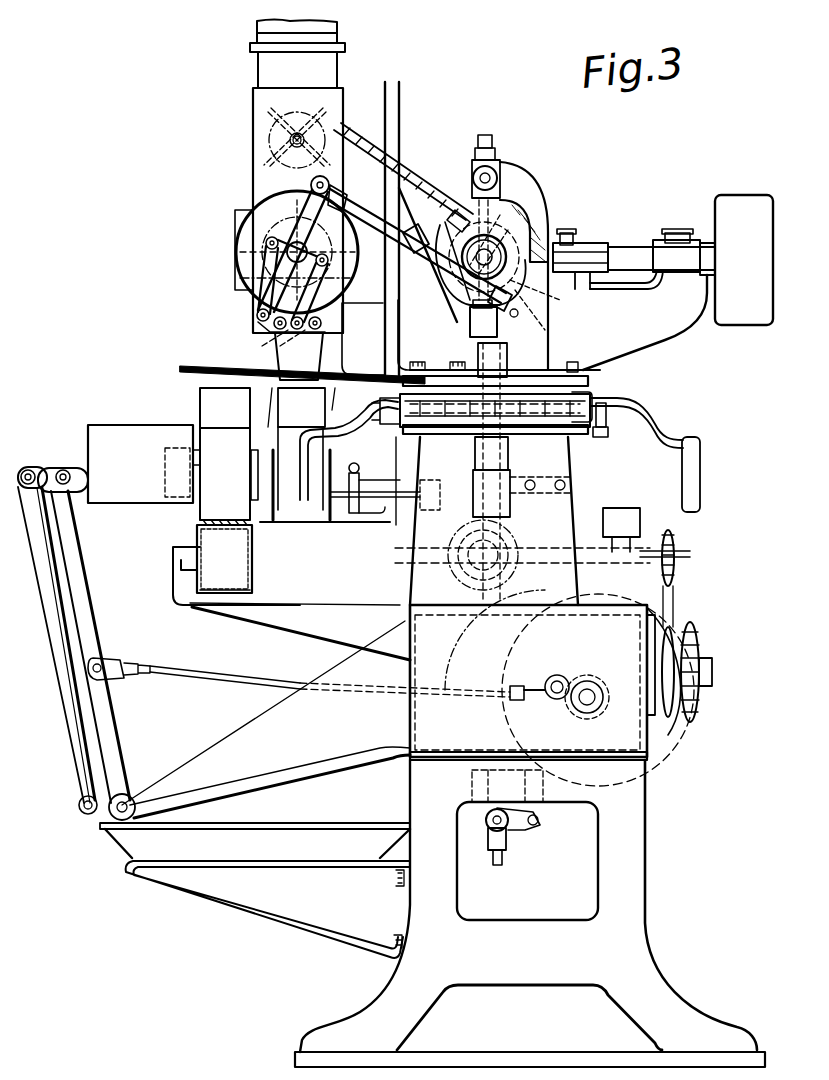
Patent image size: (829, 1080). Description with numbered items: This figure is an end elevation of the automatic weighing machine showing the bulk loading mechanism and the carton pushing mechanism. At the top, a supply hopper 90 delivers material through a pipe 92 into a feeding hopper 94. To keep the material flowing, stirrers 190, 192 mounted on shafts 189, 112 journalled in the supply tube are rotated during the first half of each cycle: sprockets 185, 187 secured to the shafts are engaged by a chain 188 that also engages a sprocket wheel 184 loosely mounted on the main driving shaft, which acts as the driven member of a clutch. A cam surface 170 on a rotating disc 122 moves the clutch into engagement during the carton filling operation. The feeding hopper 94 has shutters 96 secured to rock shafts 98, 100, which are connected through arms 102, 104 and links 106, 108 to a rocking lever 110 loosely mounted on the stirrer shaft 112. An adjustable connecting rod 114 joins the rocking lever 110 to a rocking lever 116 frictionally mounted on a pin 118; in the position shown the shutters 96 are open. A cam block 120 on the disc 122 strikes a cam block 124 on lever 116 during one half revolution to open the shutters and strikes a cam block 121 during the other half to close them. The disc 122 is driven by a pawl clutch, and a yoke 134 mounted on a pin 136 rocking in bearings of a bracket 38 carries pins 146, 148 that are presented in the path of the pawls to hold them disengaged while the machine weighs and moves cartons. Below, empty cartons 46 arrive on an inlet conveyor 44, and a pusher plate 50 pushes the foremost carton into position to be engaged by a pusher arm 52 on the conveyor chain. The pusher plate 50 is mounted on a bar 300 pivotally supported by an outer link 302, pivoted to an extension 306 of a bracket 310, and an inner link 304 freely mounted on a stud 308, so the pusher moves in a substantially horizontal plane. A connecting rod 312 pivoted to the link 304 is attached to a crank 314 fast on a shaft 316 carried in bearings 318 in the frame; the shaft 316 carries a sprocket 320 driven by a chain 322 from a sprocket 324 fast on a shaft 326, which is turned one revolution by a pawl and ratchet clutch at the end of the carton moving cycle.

The supply hopper 90 is at (257, 28).
The pipe 92 is at (253, 105).
The stirrer 190 is at (268, 136).
The shaft 189 is at (297, 140).
The sprocket 185 is at (263, 128).
The chain 188 is at (385, 132).
The feeding hopper 94 is at (248, 222).
The shaft 112 is at (285, 245).
The stirrer 192 is at (250, 252).
The rocking lever 110 is at (312, 195).
The link 106 is at (250, 280).
The sprocket 187 is at (255, 290).
The arm 102 is at (258, 320).
The rock shaft 98 is at (274, 330).
The shutter 96 is at (262, 347).
The rock shaft 100 is at (322, 345).
The arm 104 is at (330, 340).
The link 108 is at (363, 339).
The adjustable connecting rod 114 is at (395, 198).
The rotating disc 122 is at (425, 185).
The cam block 121 is at (470, 176).
The pin 118 is at (500, 165).
The pin 146 is at (512, 175).
The cam block 120 is at (525, 195).
The sprocket wheel 184 is at (520, 206).
The pin 148 is at (468, 318).
The cam surface 170 is at (458, 316).
The cam block 124 is at (548, 302).
The rocking lever 116 is at (550, 322).
The yoke 134 is at (565, 216).
The pin 136 is at (575, 240).
The bracket 38 is at (622, 240).
The pusher arm 52 is at (312, 467).
The shaft 326 is at (458, 605).
The sprocket 324 is at (405, 622).
The sprocket 320 is at (648, 762).
The crank 314 is at (568, 722).
The chain 322 is at (500, 690).
The bearing 318 is at (678, 625).
The shaft 316 is at (662, 728).
The bracket 310 is at (195, 760).
The extension 306 is at (90, 818).
The stud 308 is at (118, 822).
The bar 300 is at (45, 470).
The outer link 302 is at (52, 622).
The inner link 304 is at (90, 605).
The connecting rod 312 is at (246, 645).
The carton 46 is at (207, 400).
The pusher plate 50 is at (165, 410).
The inlet conveyor 44 is at (197, 528).